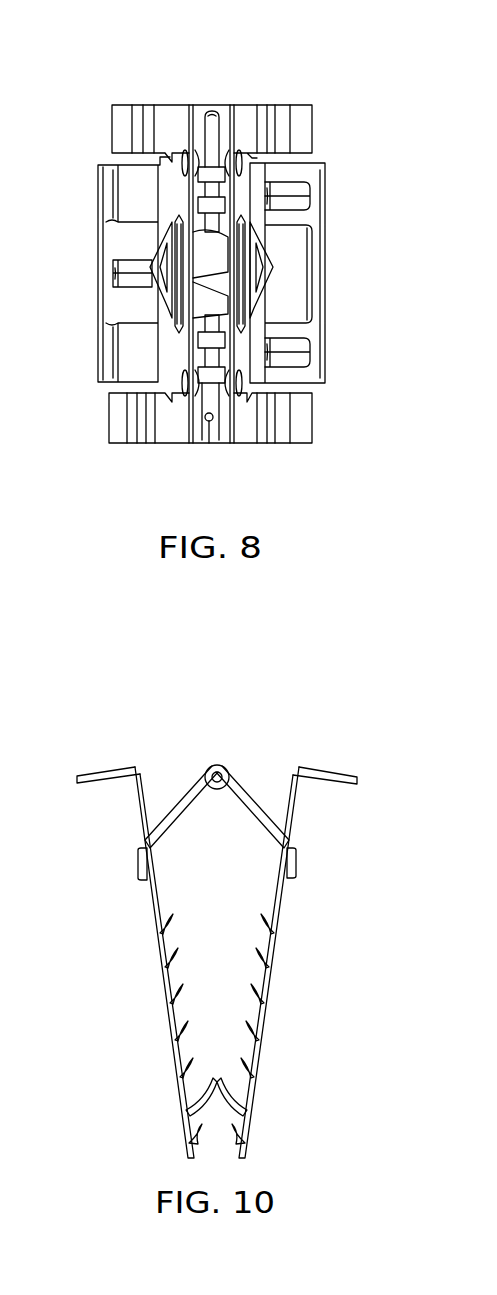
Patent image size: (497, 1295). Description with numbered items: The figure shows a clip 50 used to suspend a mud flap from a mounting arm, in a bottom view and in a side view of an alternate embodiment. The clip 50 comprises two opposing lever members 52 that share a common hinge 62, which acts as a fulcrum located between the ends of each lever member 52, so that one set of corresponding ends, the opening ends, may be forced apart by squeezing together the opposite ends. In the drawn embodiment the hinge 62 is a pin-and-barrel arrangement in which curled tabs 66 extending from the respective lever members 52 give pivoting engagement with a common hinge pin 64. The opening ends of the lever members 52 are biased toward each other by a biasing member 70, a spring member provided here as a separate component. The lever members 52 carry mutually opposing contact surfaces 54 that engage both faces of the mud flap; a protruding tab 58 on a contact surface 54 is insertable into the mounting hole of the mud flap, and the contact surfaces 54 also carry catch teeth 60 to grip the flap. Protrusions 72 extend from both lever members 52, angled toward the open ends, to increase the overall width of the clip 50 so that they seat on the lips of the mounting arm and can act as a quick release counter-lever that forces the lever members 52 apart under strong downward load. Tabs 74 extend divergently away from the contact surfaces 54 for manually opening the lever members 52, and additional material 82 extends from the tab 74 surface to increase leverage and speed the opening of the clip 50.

In FIG. 8, the clip 50 is at (118, 58).
In FIG. 10, the clip 50 is at (113, 708).
In FIG. 10, the lever members 52 is at (172, 1053).
In FIG. 10, the contact surfaces 54 is at (268, 901).
In FIG. 8, the protruding tab 58 is at (200, 237).
In FIG. 10, the protruding tab 58 is at (228, 1077).
In FIG. 8, the catch teeth 60 is at (197, 387).
In FIG. 10, the catch teeth 60 is at (170, 924).
In FIG. 8, the hinge 62 is at (218, 446).
In FIG. 10, the hinge 62 is at (218, 768).
In FIG. 8, the hinge pin 64 is at (211, 113).
In FIG. 10, the hinge pin 64 is at (237, 748).
In FIG. 8, the curled tabs 66 is at (205, 172).
In FIG. 10, the biasing member 70 is at (185, 786).
In FIG. 8, the protrusions 72 is at (122, 128).
In FIG. 10, the protrusions 72 is at (327, 773).
In FIG. 8, the tabs 74 is at (313, 215).
In FIG. 8, the additional material 82 is at (130, 267).